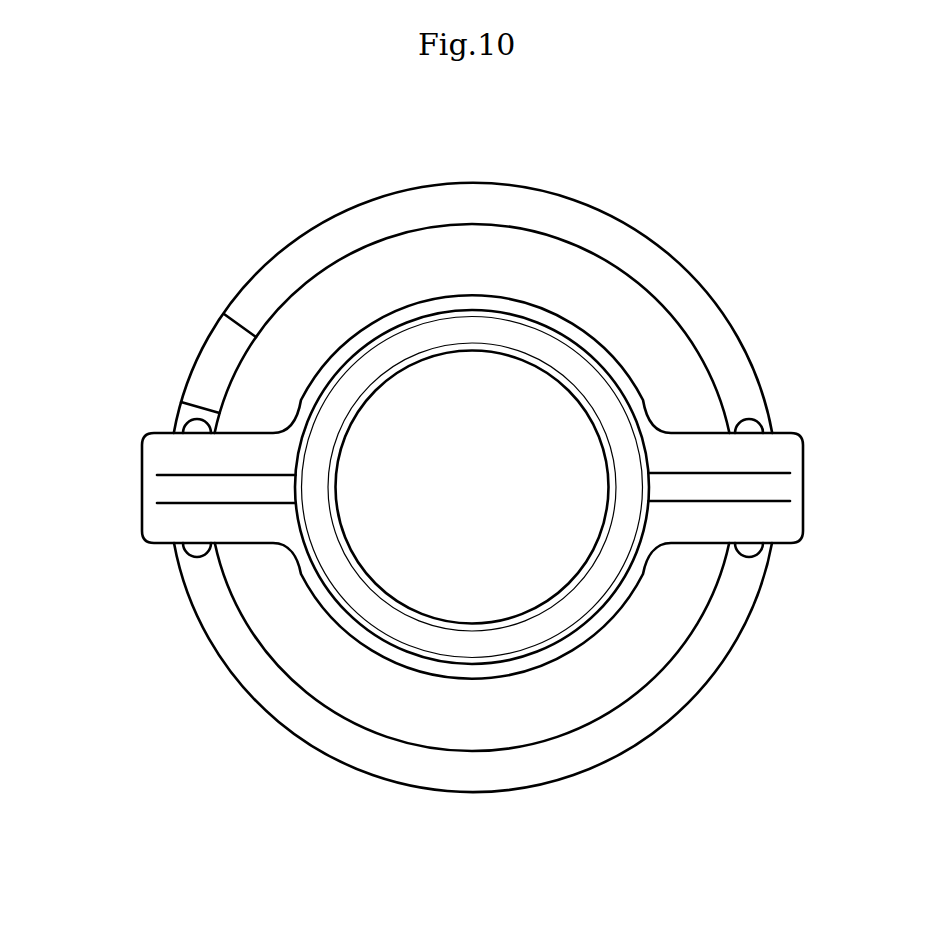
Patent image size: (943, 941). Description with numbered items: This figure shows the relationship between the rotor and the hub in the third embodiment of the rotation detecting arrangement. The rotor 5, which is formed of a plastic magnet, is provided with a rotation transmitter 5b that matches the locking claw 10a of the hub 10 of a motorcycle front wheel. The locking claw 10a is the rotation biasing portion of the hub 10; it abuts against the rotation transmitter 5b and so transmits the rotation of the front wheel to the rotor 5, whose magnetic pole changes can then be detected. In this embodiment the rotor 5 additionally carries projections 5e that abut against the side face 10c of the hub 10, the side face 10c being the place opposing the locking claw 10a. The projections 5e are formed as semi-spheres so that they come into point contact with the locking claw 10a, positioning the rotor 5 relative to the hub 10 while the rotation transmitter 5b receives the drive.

The rotor 5 is at (592, 347).
The rotation transmitter 5b is at (160, 487).
The projections 5e is at (187, 435).
The hub 10 is at (210, 598).
The locking claw 10a is at (223, 347).
The side face 10c is at (238, 320).